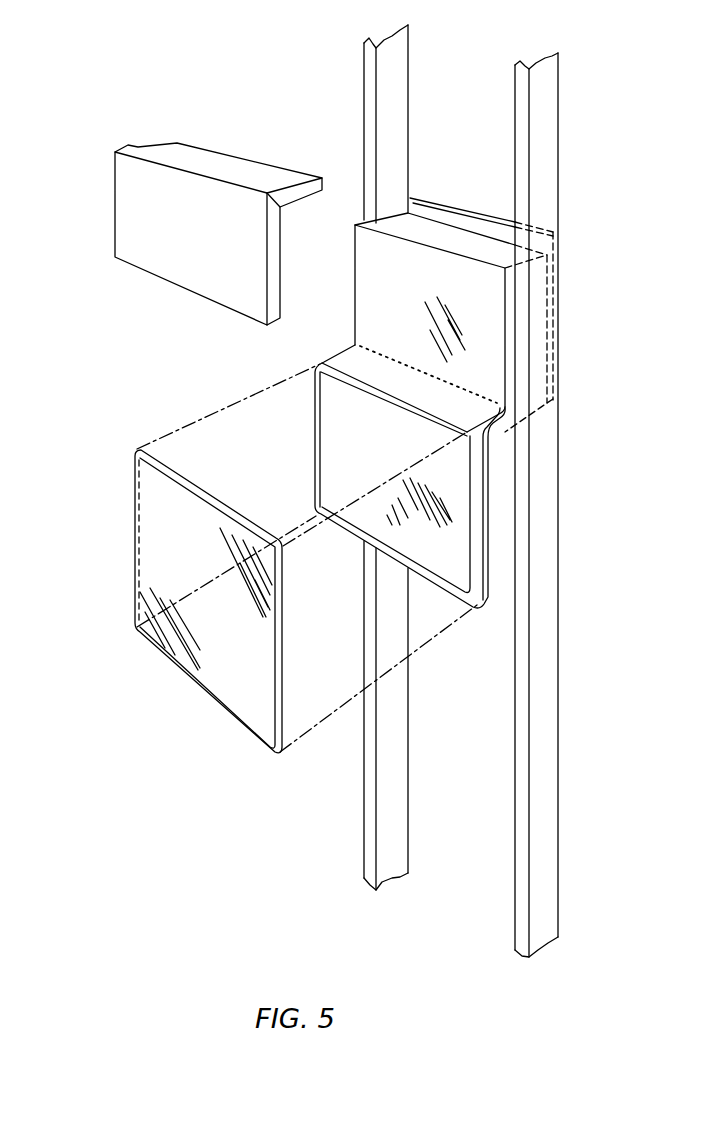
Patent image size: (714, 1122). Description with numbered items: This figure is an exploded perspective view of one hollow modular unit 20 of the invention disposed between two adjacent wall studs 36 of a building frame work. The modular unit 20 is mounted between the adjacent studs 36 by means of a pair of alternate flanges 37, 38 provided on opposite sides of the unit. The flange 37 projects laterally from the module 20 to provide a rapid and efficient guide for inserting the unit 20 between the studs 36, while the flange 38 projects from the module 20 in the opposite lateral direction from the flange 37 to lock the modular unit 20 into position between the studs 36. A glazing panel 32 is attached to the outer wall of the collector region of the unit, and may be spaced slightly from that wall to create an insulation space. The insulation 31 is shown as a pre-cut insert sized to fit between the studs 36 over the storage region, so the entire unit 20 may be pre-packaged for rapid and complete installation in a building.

The modular unit 20 is at (568, 357).
The insulation 31 is at (110, 190).
The glazing panel 32 is at (290, 647).
The studs 36 is at (412, 162).
The flange 37 is at (558, 297).
The flange 38 is at (350, 280).